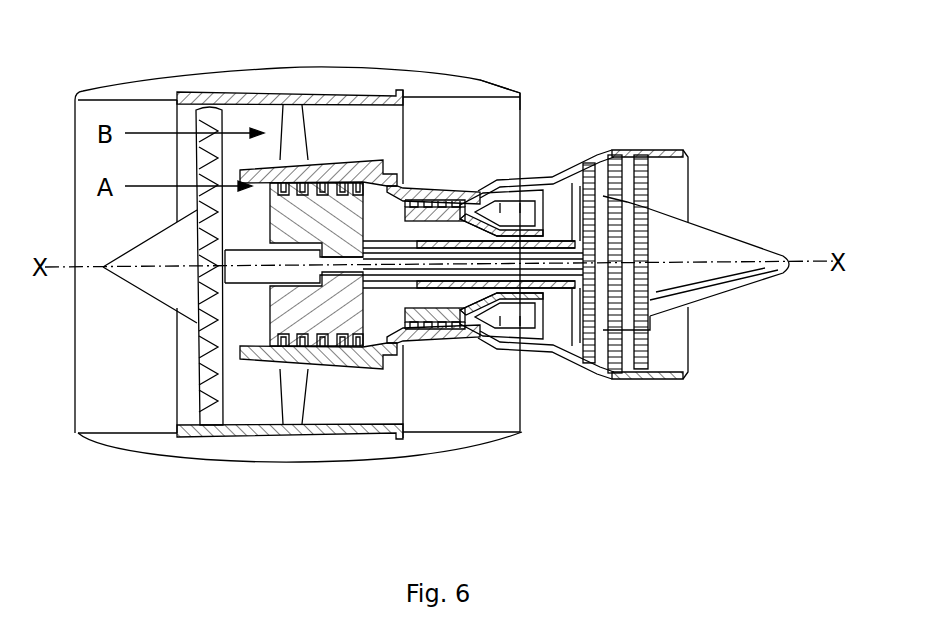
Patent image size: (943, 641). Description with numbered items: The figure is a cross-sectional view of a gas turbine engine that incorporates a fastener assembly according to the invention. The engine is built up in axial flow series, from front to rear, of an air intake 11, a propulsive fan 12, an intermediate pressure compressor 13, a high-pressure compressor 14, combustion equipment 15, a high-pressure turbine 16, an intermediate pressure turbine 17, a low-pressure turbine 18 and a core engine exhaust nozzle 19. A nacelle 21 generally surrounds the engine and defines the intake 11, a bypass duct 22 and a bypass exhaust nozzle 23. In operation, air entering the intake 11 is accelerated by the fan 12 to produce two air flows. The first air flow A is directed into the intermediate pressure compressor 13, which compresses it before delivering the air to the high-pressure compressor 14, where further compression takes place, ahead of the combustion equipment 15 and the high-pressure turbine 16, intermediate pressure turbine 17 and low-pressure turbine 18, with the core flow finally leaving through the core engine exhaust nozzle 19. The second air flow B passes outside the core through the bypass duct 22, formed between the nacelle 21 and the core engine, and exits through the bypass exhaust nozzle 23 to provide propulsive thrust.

The air intake 11 is at (122, 108).
The propulsive fan 12 is at (197, 383).
The intermediate pressure compressor 13 is at (322, 340).
The high-pressure compressor 14 is at (430, 192).
The combustion equipment 15 is at (470, 343).
The high-pressure turbine 16 is at (537, 345).
The intermediate pressure turbine 17 is at (563, 178).
The low-pressure turbine 18 is at (598, 368).
The core engine exhaust nozzle 19 is at (677, 152).
The nacelle 21 is at (298, 68).
The bypass duct 22 is at (491, 134).
The bypass exhaust nozzle 23 is at (518, 93).